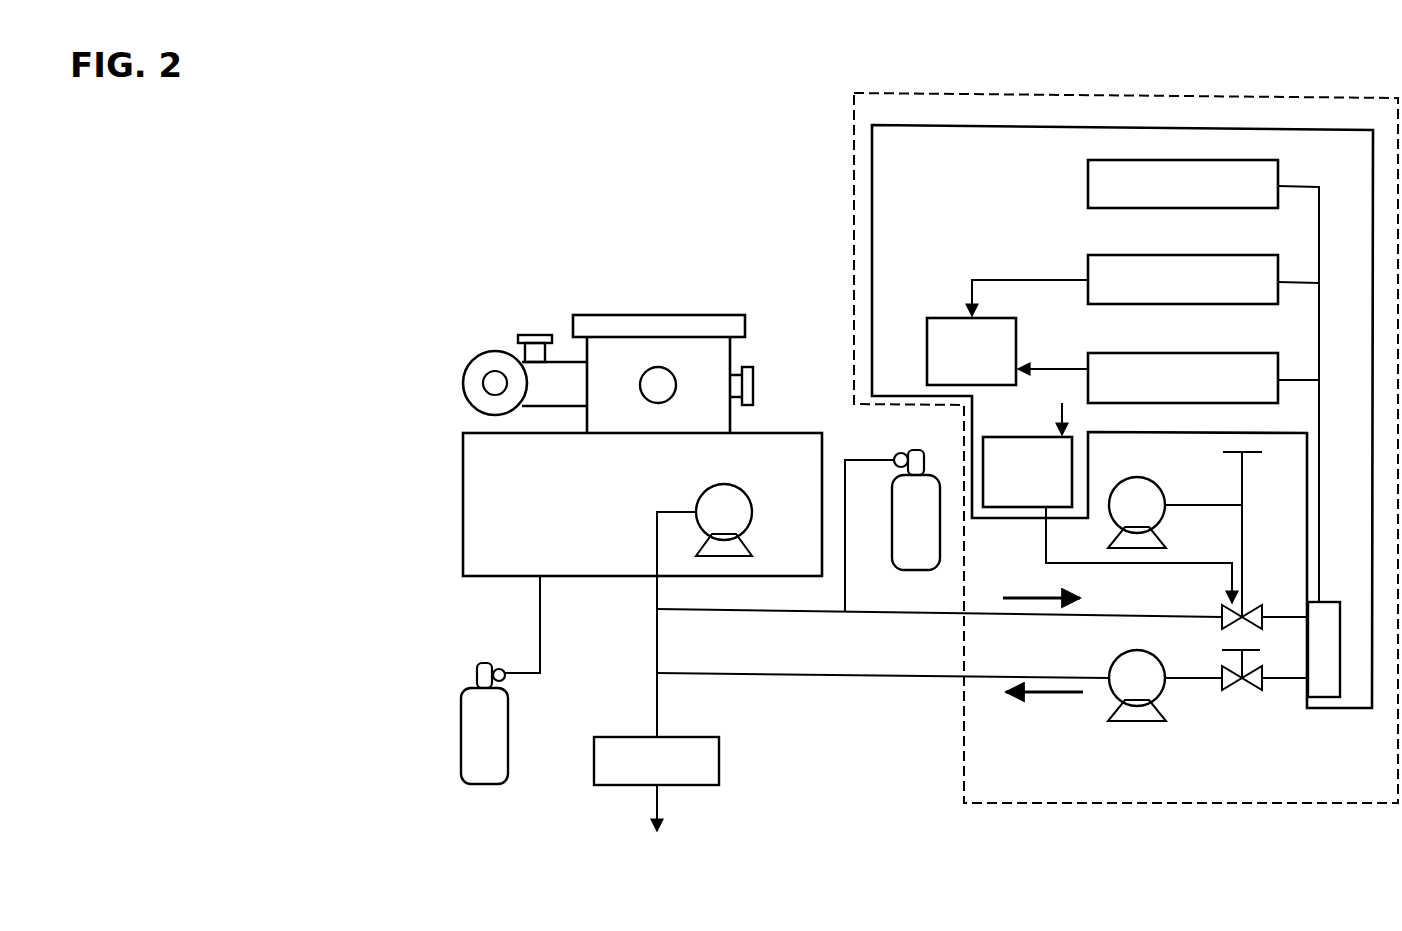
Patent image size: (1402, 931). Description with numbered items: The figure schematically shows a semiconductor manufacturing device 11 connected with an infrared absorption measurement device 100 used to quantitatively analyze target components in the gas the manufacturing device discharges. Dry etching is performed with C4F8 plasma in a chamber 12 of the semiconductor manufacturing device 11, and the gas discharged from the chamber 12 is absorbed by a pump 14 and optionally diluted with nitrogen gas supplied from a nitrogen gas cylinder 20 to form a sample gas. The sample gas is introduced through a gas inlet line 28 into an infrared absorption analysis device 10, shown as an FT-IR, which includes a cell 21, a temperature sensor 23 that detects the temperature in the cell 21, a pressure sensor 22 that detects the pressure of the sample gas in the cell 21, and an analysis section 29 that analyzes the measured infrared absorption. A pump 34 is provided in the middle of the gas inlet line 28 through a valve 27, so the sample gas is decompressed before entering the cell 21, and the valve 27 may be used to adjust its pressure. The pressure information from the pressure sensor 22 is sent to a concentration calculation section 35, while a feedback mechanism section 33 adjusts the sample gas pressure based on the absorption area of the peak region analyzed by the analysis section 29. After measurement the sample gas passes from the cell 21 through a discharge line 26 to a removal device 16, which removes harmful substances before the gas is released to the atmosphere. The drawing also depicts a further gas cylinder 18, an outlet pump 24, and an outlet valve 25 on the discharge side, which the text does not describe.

The infrared absorption measurement device 100 is at (853, 175).
The infrared absorption analysis device 10 is at (1300, 130).
The semiconductor manufacturing device 11 is at (599, 311).
The chamber 12 is at (797, 450).
The pump 14 is at (740, 490).
The removal device 16 is at (668, 737).
The gas cylinder 18 is at (498, 717).
The nitrogen gas cylinder 20 is at (934, 474).
The cell 21 is at (1325, 697).
The pressure sensor 22 is at (1218, 255).
The temperature sensor 23 is at (1218, 160).
The outlet pump 24 is at (1158, 657).
The outlet valve 25 is at (1255, 689).
The discharge line 26 is at (905, 675).
The valve 27 is at (1256, 605).
The gas inlet line 28 is at (905, 612).
The analysis section 29 is at (1218, 353).
The feedback mechanism section 33 is at (1000, 437).
The pump 34 is at (1158, 485).
The concentration calculation section 35 is at (927, 326).